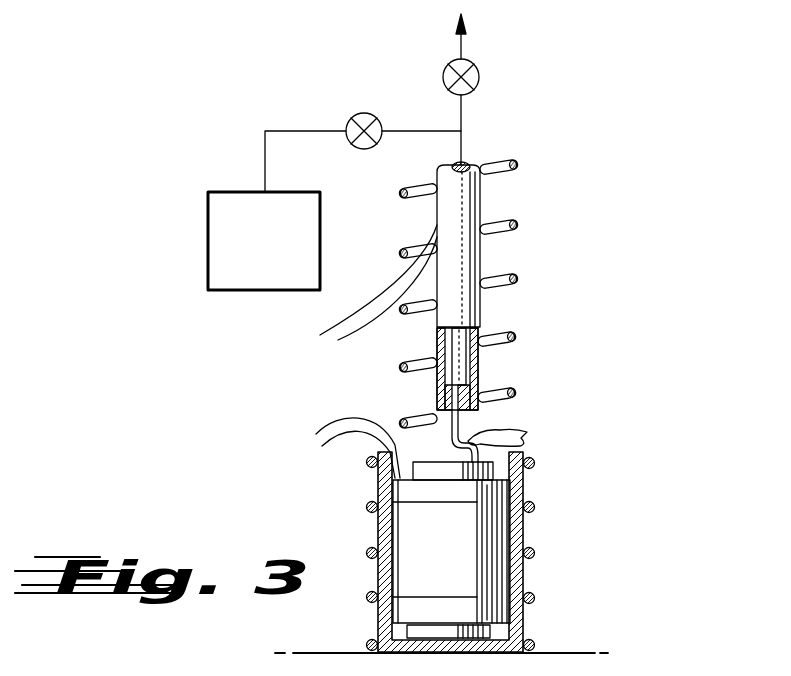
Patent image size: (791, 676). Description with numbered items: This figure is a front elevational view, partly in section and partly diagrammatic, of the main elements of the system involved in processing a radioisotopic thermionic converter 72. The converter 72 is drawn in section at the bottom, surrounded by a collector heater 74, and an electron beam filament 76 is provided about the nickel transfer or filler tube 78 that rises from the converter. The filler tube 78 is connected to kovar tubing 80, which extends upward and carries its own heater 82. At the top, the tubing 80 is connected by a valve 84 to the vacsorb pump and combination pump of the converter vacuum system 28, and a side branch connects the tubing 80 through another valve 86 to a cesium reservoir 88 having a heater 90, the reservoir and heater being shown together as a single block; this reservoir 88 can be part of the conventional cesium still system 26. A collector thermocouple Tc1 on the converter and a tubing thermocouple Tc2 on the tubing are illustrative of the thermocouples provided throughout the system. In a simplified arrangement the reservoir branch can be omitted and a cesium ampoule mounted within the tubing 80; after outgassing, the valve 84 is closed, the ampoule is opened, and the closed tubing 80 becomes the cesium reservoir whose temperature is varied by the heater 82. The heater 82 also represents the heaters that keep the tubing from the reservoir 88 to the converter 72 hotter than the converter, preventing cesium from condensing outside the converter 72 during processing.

The cesium still system 26 is at (233, 241).
The converter vacuum system 28 is at (465, 30).
The radioisotopic thermionic converter 72 is at (524, 525).
The collector heater 74 is at (534, 597).
The electron beam filament 76 is at (525, 428).
The filler tube 78 is at (472, 412).
The tubing 80 is at (478, 328).
The heater 82 is at (517, 279).
The valve 84 is at (479, 82).
The valve 86 is at (364, 113).
The cesium reservoir 88 is at (257, 227).
The heater 90 is at (256, 269).
The collector thermocouple Tc1 is at (395, 476).
The tubing thermocouple Tc2 is at (437, 218).